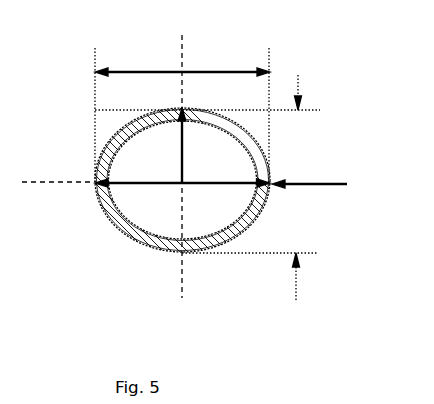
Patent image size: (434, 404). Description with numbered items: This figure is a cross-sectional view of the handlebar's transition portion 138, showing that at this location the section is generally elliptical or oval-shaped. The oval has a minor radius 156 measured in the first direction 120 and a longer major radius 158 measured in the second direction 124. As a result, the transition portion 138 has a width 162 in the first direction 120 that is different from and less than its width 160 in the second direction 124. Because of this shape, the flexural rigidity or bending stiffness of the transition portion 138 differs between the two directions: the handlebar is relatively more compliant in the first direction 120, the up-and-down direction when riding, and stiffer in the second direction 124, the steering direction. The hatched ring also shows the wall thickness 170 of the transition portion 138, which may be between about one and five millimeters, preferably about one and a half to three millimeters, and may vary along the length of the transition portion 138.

The first direction 120 is at (182, 35).
The width in the second direction 160 is at (205, 72).
The width in the first direction 162 is at (298, 75).
The transition portion 138 is at (77, 153).
The minor radius 156 is at (180, 138).
The wall thickness 170 is at (288, 183).
The second direction 124 is at (312, 185).
The major radius 158 is at (152, 183).